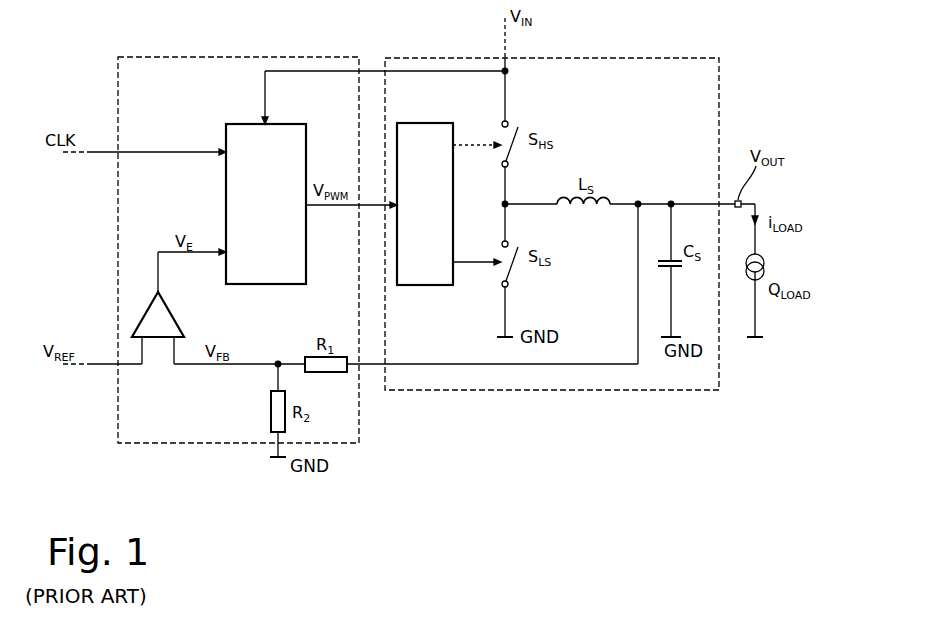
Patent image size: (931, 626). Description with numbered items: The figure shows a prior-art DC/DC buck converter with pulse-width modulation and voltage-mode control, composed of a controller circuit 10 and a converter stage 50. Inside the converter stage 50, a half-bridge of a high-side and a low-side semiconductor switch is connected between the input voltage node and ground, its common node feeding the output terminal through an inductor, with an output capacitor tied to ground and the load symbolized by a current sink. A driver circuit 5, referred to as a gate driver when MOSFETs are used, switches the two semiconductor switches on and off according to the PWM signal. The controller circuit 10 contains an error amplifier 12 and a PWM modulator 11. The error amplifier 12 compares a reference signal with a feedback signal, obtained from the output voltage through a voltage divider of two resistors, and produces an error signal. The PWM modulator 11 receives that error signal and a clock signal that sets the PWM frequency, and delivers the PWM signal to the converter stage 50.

The controller circuit 10 is at (240, 238).
The converter stage 50 is at (561, 212).
The PWM modulator 11 is at (280, 276).
The error amplifier 12 is at (160, 305).
The driver circuit 5 is at (438, 275).